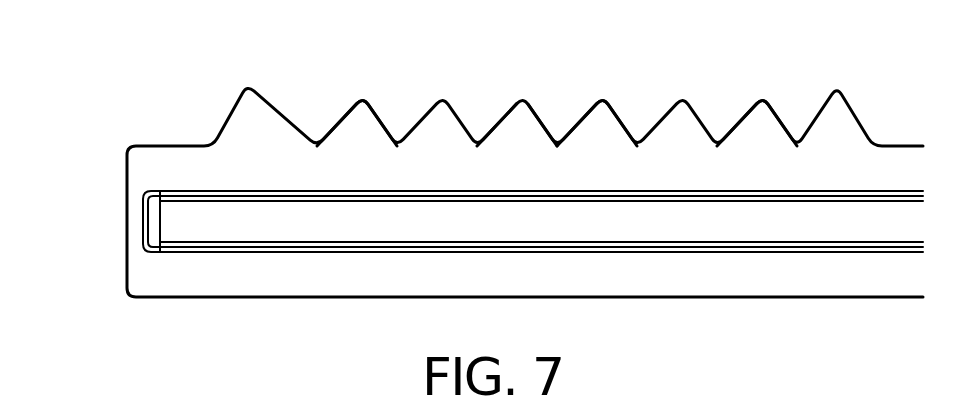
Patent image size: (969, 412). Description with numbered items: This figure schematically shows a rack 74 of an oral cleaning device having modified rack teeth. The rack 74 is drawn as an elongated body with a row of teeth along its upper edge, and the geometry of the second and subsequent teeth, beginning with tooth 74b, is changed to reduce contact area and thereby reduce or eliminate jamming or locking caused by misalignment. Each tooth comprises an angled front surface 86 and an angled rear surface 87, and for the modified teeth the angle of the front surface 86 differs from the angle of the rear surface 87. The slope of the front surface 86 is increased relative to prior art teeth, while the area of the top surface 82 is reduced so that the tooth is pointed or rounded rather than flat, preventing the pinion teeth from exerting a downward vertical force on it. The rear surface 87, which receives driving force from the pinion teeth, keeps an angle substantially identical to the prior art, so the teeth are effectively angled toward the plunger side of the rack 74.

The rack 74 is at (127, 263).
The second rack tooth 74b is at (363, 97).
The top surface 82 is at (607, 97).
The front surface 86 is at (508, 115).
The rear surface 87 is at (540, 115).